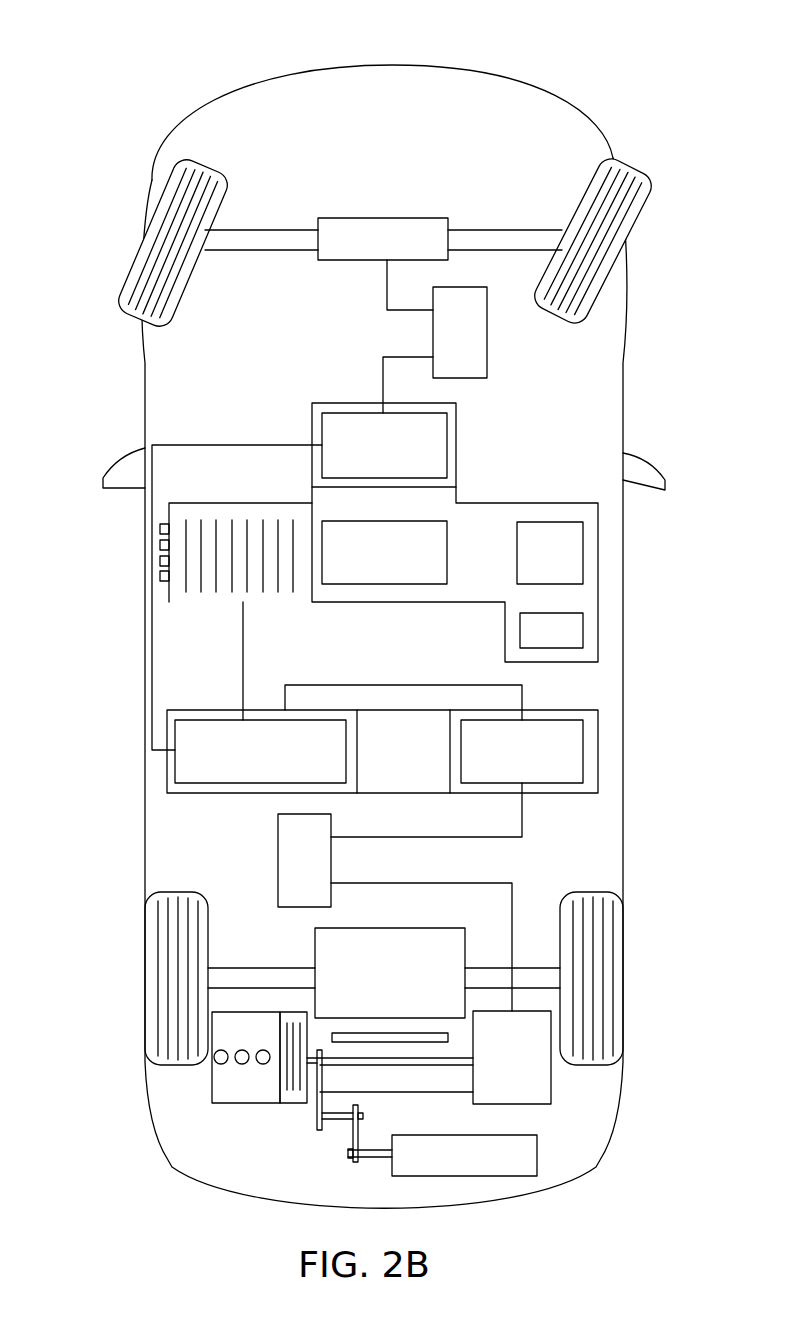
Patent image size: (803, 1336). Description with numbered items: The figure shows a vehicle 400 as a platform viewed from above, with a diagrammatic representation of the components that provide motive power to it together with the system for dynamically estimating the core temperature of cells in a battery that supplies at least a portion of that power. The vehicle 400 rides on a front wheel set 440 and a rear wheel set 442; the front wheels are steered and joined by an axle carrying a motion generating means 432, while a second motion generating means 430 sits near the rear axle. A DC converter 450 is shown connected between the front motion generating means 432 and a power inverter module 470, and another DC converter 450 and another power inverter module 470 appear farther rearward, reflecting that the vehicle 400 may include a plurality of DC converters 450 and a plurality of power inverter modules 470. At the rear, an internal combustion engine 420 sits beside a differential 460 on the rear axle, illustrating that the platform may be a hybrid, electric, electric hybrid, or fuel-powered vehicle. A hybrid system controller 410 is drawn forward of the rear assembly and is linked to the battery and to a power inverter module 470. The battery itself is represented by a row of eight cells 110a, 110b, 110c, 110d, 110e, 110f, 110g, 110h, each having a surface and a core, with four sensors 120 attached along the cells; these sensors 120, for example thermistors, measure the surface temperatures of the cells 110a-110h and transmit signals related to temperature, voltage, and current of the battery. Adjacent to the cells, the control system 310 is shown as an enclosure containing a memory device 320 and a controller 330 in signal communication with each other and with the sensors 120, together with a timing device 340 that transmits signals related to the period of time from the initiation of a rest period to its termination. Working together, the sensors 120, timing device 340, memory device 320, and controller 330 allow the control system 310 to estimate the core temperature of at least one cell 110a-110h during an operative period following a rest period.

The vehicle 400 is at (600, 90).
The front wheel set 440 is at (118, 283).
The rear wheel set 442 is at (145, 973).
The motion generating means 432 is at (386, 218).
The DC converter 450 is at (487, 353).
The power inverter module 470 is at (335, 413).
The control system 310 is at (490, 487).
The memory device 320 is at (447, 557).
The controller 330 is at (548, 522).
The timing device 340 is at (520, 627).
The hybrid system controller 410 is at (205, 720).
The sensor 120 is at (160, 529).
The cell 110a is at (186, 527).
The cell 110b is at (201, 580).
The cell 110c is at (216, 533).
The cell 110d is at (232, 575).
The cell 110e is at (247, 526).
The cell 110f is at (263, 580).
The cell 110g is at (278, 533).
The cell 110h is at (293, 575).
The differential 460 is at (315, 948).
The motion generating means 430 is at (551, 1082).
The internal combustion engine 420 is at (248, 1105).